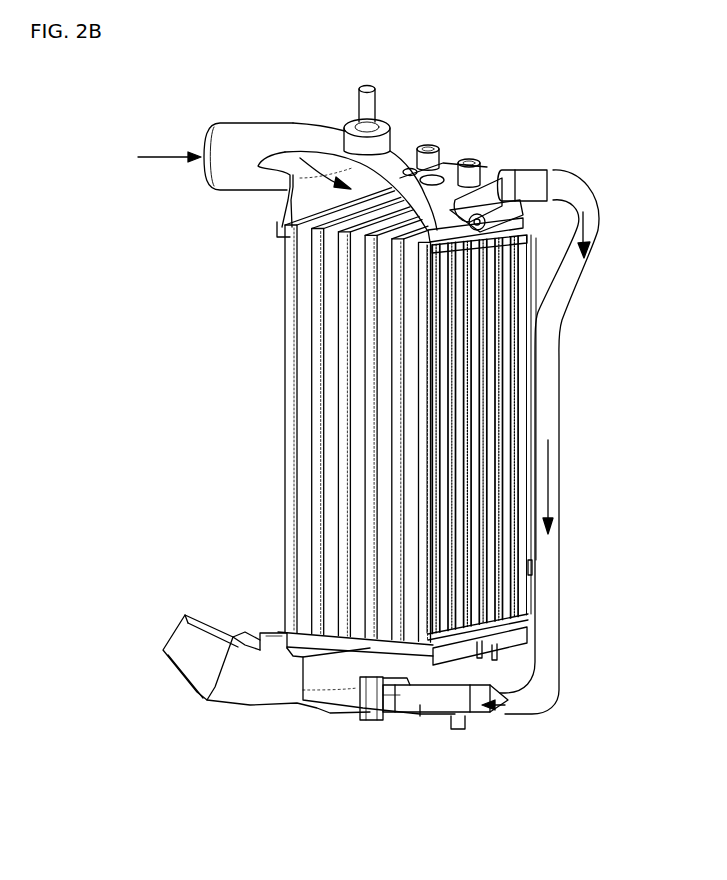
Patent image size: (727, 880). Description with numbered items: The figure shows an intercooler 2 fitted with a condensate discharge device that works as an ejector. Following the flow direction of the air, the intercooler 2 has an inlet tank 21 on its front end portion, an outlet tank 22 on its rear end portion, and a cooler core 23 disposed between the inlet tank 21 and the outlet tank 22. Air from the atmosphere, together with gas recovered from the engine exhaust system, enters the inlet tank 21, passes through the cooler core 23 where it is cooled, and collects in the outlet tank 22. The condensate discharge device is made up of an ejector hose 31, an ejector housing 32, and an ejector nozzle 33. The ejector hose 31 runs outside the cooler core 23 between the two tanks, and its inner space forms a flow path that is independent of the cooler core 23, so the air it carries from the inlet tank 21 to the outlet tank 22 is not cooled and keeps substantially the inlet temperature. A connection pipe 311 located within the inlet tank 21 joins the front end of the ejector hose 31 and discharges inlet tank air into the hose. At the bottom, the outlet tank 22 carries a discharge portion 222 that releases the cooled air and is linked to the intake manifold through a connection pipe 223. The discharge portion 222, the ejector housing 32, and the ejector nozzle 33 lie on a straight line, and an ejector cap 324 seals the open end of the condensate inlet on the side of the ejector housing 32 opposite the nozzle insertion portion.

The intercooler 2 is at (232, 285).
The inlet tank 21 is at (386, 157).
The connection pipe 311 is at (497, 180).
The cooler core 23 is at (272, 392).
The ejector hose 31 is at (556, 394).
The outlet tank 22 is at (332, 718).
The connection pipe 223 is at (183, 610).
The discharge portion 222 is at (267, 642).
The ejector housing 32 is at (432, 722).
The ejector cap 324 is at (392, 722).
The ejector nozzle 33 is at (463, 730).